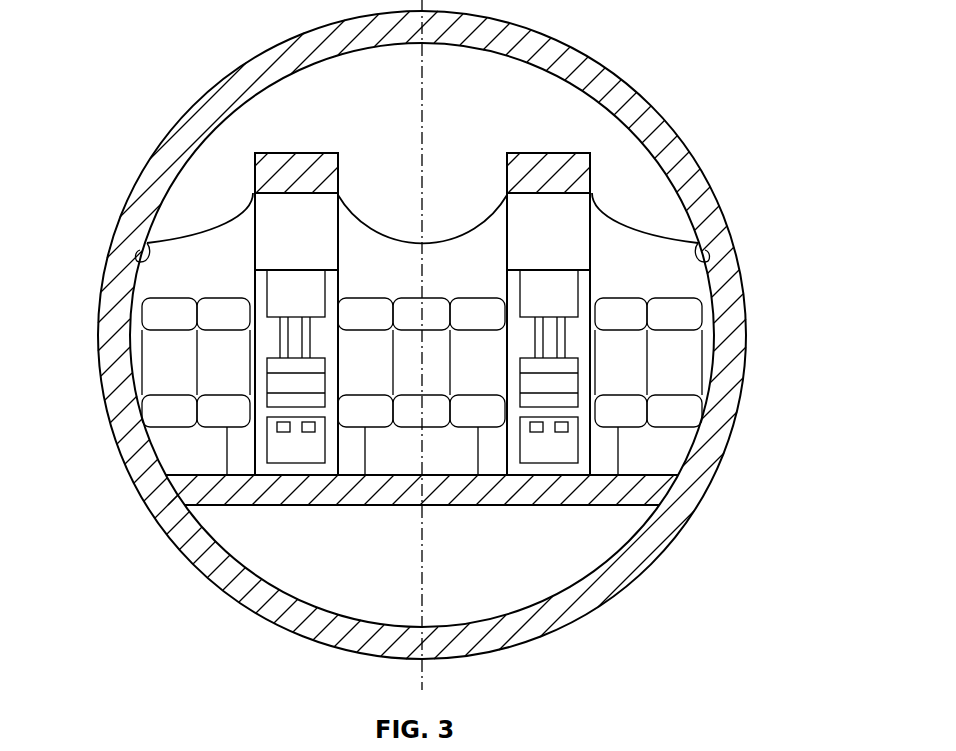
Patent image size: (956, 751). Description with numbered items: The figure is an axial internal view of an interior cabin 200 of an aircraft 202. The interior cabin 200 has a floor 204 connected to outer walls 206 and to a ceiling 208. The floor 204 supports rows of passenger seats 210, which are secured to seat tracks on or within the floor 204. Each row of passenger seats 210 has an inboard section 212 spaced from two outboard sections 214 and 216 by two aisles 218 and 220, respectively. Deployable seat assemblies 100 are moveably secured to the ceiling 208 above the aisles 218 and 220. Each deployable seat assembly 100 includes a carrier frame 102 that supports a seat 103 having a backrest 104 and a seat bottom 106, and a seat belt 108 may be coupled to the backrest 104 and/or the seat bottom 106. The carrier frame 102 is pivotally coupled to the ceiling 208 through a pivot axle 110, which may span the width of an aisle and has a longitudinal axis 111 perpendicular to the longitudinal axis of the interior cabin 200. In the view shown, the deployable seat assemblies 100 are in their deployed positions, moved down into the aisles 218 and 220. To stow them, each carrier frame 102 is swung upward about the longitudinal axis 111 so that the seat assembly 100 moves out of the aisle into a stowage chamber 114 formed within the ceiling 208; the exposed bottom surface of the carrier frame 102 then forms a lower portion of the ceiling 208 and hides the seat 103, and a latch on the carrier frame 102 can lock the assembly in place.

The deployable seat assembly 100 is at (325, 222).
The carrier frame 102 is at (255, 223).
The seat 103 is at (317, 268).
The backrest 104 is at (312, 290).
The seat bottom 106 is at (287, 383).
The seat belt 108 is at (296, 325).
The pivot axle 110 is at (297, 193).
The longitudinal axis 111 is at (272, 193).
The stowage chamber 114 is at (300, 153).
The interior cabin 200 is at (577, 122).
The aircraft 202 is at (727, 231).
The floor 204 is at (377, 493).
The outer wall 206 is at (137, 254).
The ceiling 208 is at (373, 93).
The passenger seat 210 is at (138, 374).
The inboard section 212 is at (487, 297).
The outboard section 214 is at (180, 298).
The outboard section 216 is at (667, 297).
The aisle 218 is at (270, 478).
The aisle 220 is at (574, 478).